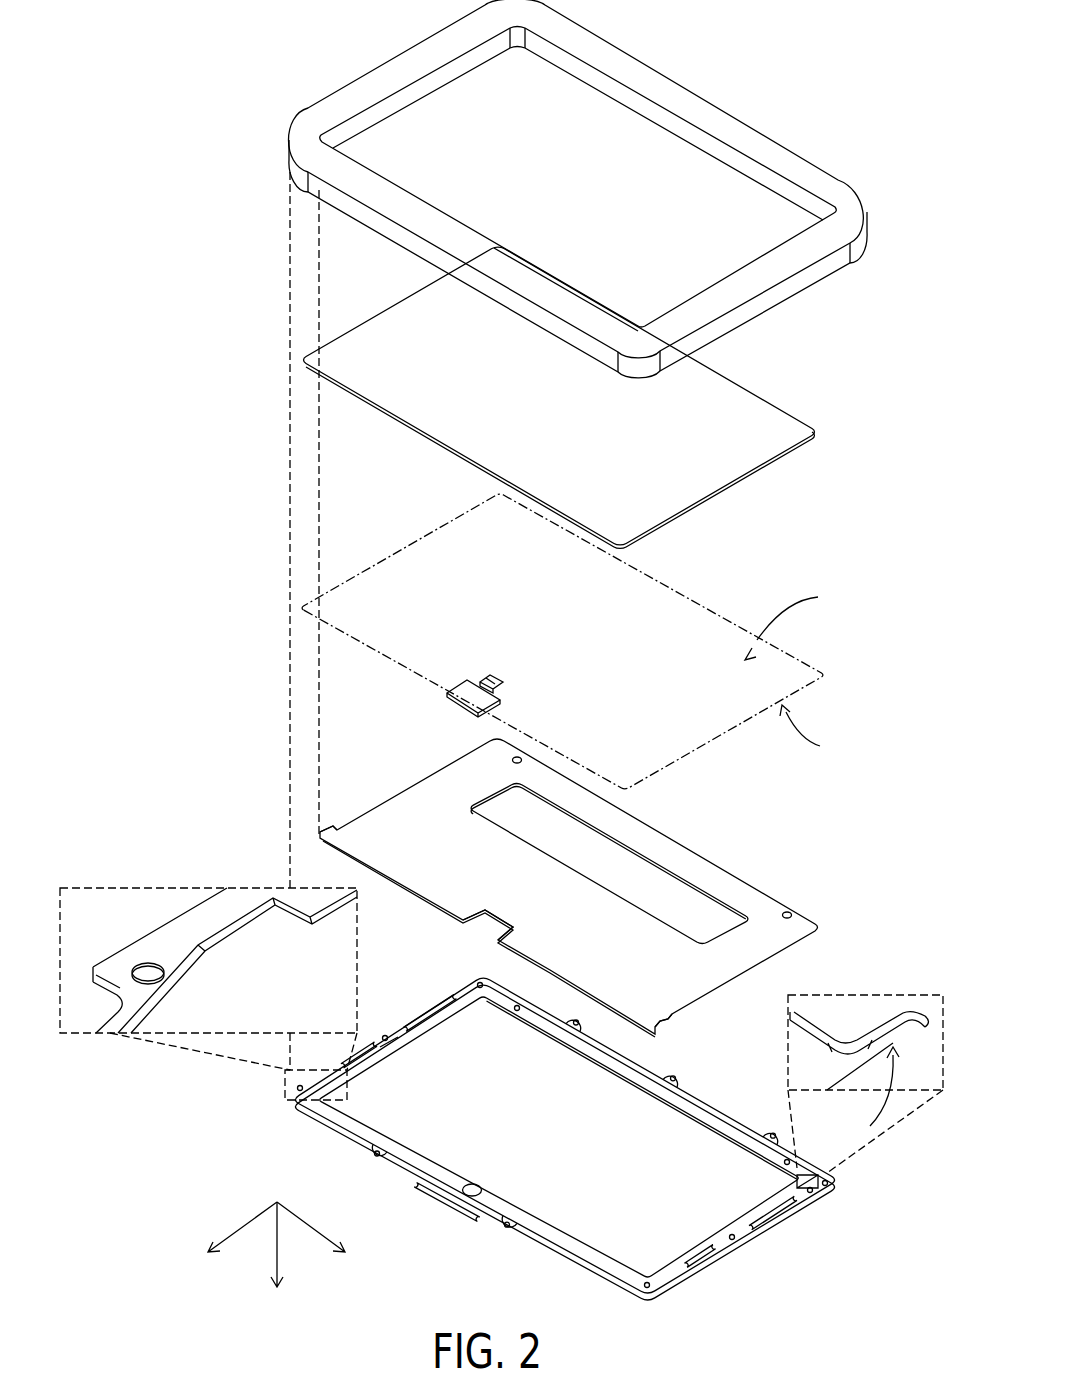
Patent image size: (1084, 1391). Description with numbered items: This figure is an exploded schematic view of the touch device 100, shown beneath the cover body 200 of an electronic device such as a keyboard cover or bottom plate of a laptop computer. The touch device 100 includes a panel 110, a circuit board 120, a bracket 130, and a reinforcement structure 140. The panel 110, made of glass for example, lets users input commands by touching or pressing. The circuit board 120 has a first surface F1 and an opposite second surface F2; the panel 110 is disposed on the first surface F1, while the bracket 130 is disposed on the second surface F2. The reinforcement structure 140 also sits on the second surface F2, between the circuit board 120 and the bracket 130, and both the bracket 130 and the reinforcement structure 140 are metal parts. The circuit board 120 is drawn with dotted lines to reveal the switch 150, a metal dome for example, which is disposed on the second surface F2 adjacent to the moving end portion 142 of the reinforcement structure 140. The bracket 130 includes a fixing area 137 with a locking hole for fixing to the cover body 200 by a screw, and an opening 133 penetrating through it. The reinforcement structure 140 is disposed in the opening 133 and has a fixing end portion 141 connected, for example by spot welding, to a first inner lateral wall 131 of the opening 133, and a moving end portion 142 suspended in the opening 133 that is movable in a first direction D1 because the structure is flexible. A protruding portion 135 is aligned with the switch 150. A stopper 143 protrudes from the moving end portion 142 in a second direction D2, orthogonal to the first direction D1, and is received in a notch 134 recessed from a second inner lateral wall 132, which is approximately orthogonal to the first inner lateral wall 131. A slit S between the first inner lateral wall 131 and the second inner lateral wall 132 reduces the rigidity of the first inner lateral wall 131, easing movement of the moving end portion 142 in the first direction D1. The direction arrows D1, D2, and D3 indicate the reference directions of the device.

The touch device 100 is at (111, 0).
The panel 110 is at (748, 413).
The circuit board 120 is at (829, 651).
The bracket 130 is at (501, 1074).
The first inner lateral wall 131 is at (805, 1030).
The second inner lateral wall 132 is at (330, 903).
The opening 133 is at (402, 1034).
The notch 134 is at (236, 952).
The protruding portion 135 is at (473, 1198).
The fixing area 137 is at (762, 1128).
The reinforcement structure 140 is at (612, 896).
The fixing end portion 141 is at (697, 872).
The moving end portion 142 is at (450, 906).
The stopper 143 is at (337, 830).
The switch 150 is at (468, 700).
The cover body 200 is at (756, 97).
The first surface F1 is at (796, 620).
The second surface F2 is at (815, 733).
The slit S is at (876, 1094).
The first direction D1 is at (276, 1260).
The second direction D2 is at (330, 1238).
The third direction D3 is at (225, 1238).